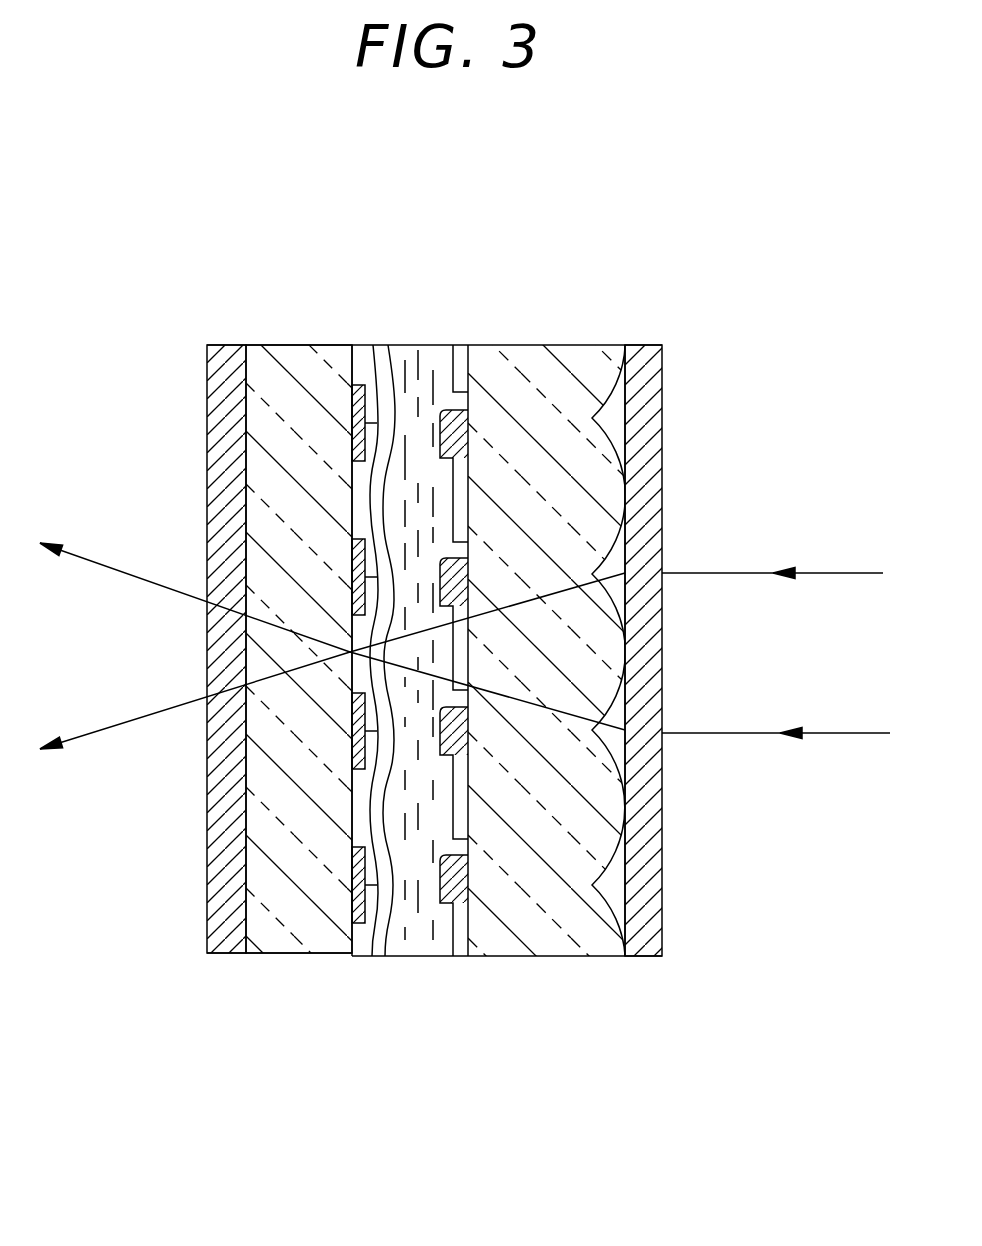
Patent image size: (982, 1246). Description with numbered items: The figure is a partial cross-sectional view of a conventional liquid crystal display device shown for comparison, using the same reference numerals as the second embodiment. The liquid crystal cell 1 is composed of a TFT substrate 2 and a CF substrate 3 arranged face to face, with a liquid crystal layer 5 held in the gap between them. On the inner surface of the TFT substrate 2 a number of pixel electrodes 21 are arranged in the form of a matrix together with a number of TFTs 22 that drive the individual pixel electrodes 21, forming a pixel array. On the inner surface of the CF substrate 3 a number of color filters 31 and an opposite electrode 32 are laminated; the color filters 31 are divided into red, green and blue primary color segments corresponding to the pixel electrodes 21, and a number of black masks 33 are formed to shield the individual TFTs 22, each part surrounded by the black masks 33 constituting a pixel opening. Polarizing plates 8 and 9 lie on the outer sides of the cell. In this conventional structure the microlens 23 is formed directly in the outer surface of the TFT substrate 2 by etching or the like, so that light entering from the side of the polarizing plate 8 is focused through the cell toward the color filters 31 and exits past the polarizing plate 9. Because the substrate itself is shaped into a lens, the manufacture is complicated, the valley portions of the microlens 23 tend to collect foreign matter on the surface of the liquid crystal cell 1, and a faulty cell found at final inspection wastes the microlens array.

The liquid crystal cell 1 is at (453, 305).
The TFT substrate 2 is at (618, 647).
The pixel electrodes 21 is at (458, 957).
The TFTs 22 is at (515, 957).
The microlens 23 is at (606, 846).
The CF substrate 3 is at (298, 350).
The color filters 31 is at (356, 955).
The opposite electrode 32 is at (373, 957).
The black masks 33 is at (350, 882).
The liquid crystal layer 5 is at (415, 350).
The polarizing plate 8 is at (650, 477).
The polarizing plate 9 is at (230, 347).